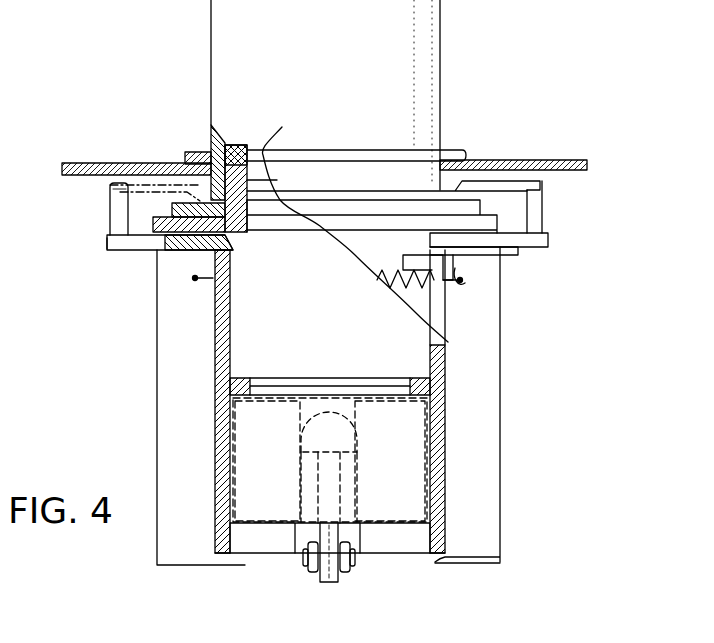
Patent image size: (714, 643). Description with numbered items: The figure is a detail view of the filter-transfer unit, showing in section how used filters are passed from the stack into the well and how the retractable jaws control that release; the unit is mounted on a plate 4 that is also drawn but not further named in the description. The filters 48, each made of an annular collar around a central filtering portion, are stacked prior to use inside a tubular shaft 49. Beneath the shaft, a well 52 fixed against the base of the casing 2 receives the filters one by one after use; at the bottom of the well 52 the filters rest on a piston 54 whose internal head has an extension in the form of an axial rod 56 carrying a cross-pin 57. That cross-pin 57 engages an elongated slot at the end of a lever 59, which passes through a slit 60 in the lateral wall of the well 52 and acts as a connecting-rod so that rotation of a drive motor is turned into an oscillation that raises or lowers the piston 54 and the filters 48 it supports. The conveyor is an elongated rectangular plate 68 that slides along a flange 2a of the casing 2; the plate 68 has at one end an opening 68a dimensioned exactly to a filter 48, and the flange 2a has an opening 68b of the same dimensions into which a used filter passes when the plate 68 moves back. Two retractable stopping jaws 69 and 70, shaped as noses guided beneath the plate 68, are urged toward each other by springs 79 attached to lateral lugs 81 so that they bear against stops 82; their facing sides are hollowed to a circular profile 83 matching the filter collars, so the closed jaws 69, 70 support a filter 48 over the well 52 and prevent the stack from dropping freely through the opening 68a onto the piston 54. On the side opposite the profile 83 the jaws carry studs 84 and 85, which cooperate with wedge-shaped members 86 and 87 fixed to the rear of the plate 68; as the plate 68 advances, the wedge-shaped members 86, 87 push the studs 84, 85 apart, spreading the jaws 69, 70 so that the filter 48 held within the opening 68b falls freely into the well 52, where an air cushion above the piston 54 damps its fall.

The casing 2 is at (163, 380).
The flange 2a is at (170, 240).
The mounting plate 4 is at (520, 160).
The filter 48 is at (256, 159).
The tubular shaft 49 is at (443, 75).
The well 52 is at (460, 430).
The piston 54 is at (380, 400).
The axial rod 56 is at (328, 578).
The cross-pin 57 is at (306, 558).
The lever 59 is at (353, 567).
The slit 60 is at (362, 553).
The plate 68 is at (364, 200).
The opening 68a is at (247, 208).
The opening 68b is at (243, 232).
The stopping jaw 69 is at (157, 255).
The stopping jaw 70 is at (536, 252).
The spring 79 is at (403, 288).
The lateral lug 81 is at (193, 277).
The stop 82 is at (438, 238).
The circular profile 83 is at (237, 250).
The stud 84 is at (113, 220).
The stud 85 is at (538, 210).
The wedge-shaped member 86 is at (155, 183).
The wedge-shaped member 87 is at (495, 180).